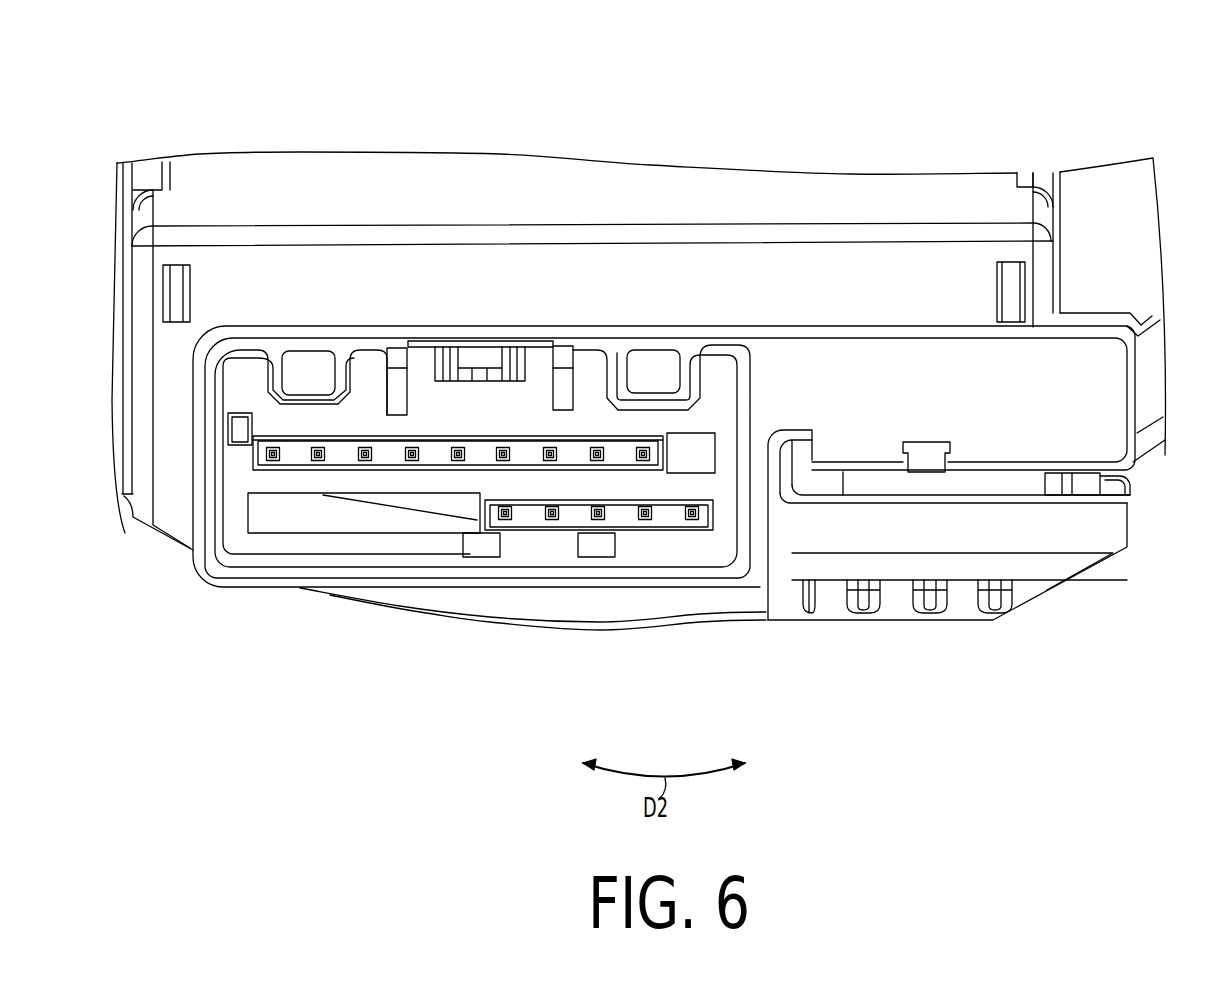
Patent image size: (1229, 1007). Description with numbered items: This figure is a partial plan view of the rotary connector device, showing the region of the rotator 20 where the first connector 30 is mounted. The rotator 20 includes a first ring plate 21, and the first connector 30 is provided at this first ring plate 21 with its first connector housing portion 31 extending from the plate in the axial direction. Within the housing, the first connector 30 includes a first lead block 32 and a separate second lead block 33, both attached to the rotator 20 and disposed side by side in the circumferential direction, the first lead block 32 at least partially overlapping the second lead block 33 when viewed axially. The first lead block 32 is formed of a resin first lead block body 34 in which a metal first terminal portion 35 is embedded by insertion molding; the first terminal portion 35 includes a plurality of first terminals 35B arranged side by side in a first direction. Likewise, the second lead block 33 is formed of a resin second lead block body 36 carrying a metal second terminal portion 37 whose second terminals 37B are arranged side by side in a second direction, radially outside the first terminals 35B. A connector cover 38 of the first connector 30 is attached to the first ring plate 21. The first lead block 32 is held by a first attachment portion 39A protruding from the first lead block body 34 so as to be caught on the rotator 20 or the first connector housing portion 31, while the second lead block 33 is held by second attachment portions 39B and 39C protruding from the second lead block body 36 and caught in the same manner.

The rotator 20 is at (1158, 173).
The first ring plate 21 is at (1098, 197).
The first connector 30 is at (183, 610).
The first connector housing portion 31 is at (678, 337).
The first lead block 32 is at (318, 476).
The second lead block 33 is at (478, 514).
The first lead block body 34 is at (293, 460).
The first terminal portion 35 is at (450, 55).
The first terminals 35B is at (412, 447).
The second lead block body 36 is at (486, 530).
The second terminal portion 37 is at (703, 515).
The second terminals 37B is at (507, 522).
The connector cover 38 is at (1137, 480).
The first attachment portion 39A is at (240, 430).
The second attachment portion 39B is at (597, 545).
The second attachment portion 39C is at (927, 462).